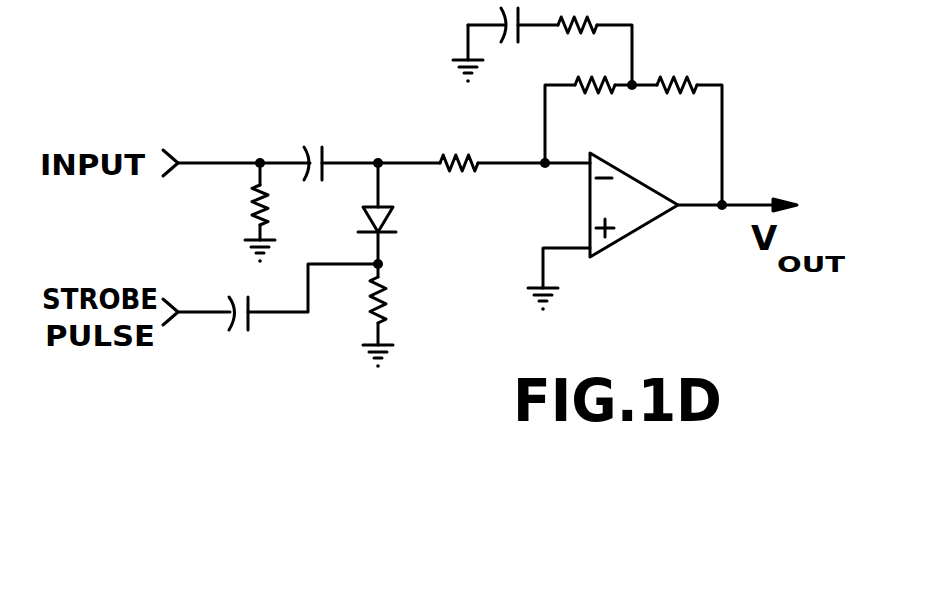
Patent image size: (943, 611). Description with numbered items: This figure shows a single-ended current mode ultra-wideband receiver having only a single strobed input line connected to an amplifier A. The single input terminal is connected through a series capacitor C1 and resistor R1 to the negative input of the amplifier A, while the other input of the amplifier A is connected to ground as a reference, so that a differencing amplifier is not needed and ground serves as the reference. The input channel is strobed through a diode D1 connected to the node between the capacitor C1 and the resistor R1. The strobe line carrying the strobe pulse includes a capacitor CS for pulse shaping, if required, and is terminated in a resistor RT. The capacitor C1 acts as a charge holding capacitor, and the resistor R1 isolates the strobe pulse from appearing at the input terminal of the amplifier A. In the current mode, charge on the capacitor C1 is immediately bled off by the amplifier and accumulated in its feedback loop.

The series capacitor C1 is at (341, 146).
The series resistor R1 is at (484, 144).
The diode D1 is at (402, 213).
The terminating resistor RT is at (316, 265).
The strobe capacitor CS is at (303, 322).
The amplifier A is at (634, 205).